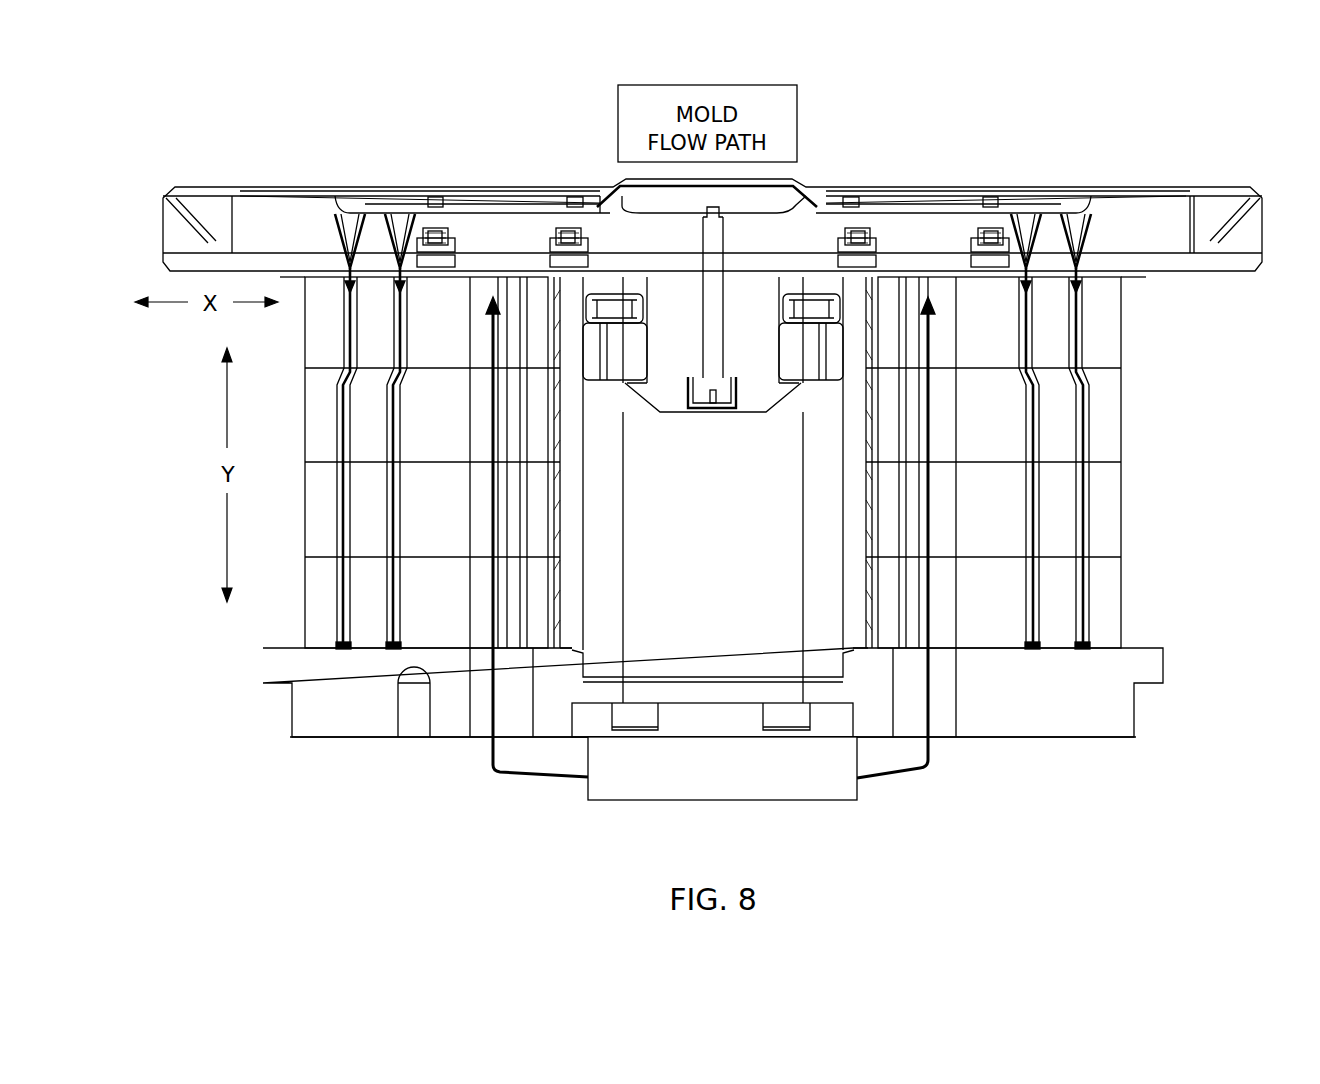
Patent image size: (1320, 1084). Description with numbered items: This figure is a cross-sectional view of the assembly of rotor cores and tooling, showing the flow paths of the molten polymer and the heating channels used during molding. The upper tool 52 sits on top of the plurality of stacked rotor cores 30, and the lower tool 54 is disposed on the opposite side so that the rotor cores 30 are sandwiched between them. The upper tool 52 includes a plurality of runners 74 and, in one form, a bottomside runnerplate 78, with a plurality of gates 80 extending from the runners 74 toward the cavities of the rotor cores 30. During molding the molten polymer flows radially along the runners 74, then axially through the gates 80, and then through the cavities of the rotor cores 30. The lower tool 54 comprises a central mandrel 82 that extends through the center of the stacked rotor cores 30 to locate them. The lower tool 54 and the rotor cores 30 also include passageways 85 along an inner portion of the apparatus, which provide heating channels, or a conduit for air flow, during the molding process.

The upper tool 52 is at (258, 205).
The runners 74 is at (482, 196).
The gates 80 is at (400, 214).
The bottomside runnerplate 78 is at (1217, 263).
The stacked rotor cores 30 is at (1112, 335).
The central mandrel 82 is at (603, 504).
The lower tool 54 is at (300, 697).
The passageways 85 is at (481, 420).